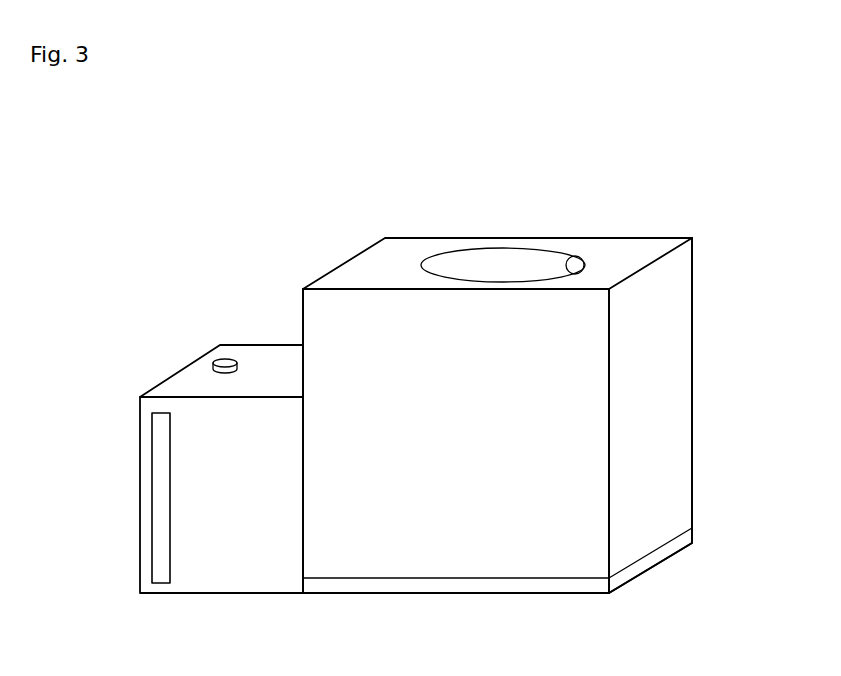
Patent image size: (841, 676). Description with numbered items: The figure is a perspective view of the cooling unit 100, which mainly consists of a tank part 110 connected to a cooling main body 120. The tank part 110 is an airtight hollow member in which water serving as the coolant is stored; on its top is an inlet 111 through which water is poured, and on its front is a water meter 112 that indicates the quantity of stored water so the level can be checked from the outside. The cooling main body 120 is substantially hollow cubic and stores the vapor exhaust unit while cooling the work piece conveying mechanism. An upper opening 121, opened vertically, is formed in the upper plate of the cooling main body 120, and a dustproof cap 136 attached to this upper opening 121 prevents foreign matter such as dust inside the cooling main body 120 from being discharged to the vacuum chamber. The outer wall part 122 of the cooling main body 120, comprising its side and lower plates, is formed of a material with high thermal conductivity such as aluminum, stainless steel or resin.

The cooling unit 100 is at (194, 98).
The tank part 110 is at (210, 422).
The inlet 111 is at (230, 341).
The water meter 112 is at (118, 486).
The cooling main body 120 is at (497, 367).
The upper opening 121 is at (580, 239).
The outer wall part 122 is at (497, 415).
The dustproof cap 136 is at (503, 243).